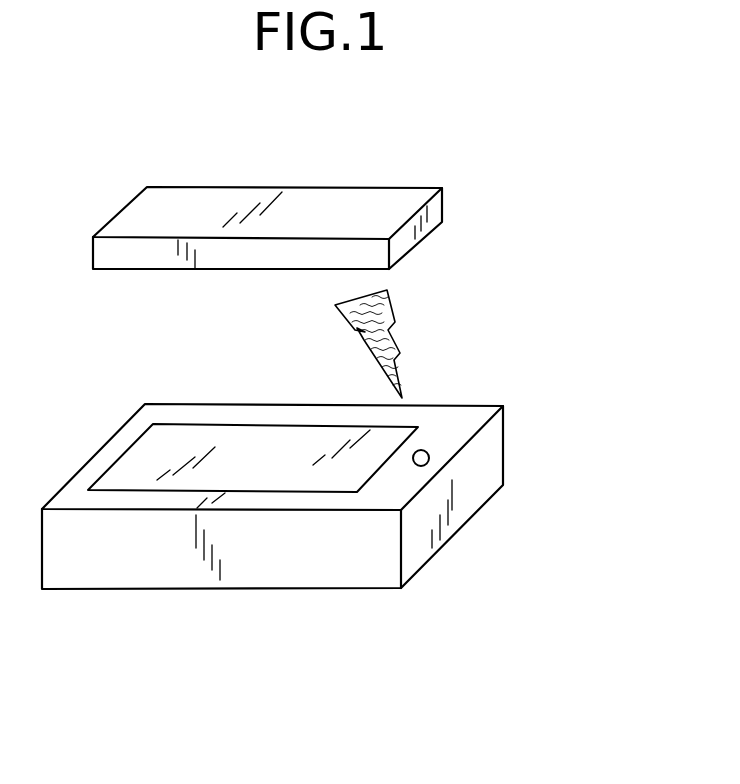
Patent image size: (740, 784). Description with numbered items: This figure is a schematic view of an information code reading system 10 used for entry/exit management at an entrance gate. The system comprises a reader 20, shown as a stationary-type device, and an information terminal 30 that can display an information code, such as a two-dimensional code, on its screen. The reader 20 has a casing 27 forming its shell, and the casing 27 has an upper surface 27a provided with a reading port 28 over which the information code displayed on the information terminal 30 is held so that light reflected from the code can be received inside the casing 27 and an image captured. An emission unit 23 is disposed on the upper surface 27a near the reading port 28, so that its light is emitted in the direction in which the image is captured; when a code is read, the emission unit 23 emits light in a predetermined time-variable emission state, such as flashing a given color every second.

The information code reading system 10 is at (549, 158).
The reader 20 is at (266, 589).
The emission unit 23 is at (430, 450).
The casing 27 is at (465, 503).
The upper surface 27a is at (452, 418).
The reading port 28 is at (153, 456).
The information terminal 30 is at (305, 188).